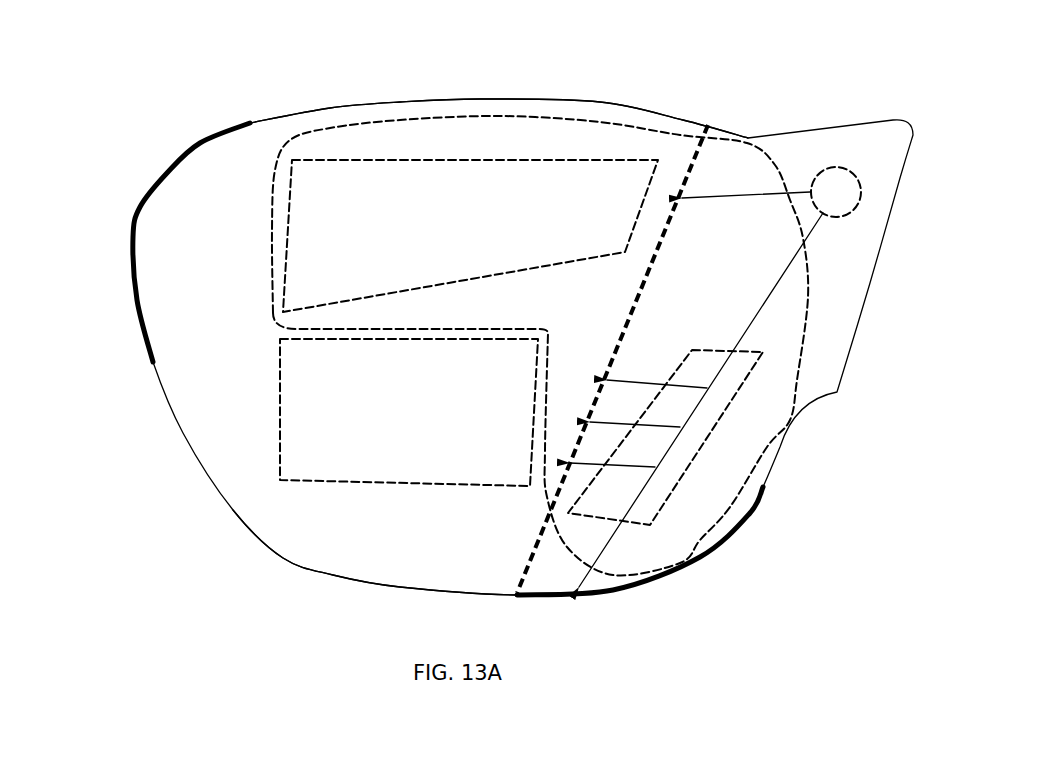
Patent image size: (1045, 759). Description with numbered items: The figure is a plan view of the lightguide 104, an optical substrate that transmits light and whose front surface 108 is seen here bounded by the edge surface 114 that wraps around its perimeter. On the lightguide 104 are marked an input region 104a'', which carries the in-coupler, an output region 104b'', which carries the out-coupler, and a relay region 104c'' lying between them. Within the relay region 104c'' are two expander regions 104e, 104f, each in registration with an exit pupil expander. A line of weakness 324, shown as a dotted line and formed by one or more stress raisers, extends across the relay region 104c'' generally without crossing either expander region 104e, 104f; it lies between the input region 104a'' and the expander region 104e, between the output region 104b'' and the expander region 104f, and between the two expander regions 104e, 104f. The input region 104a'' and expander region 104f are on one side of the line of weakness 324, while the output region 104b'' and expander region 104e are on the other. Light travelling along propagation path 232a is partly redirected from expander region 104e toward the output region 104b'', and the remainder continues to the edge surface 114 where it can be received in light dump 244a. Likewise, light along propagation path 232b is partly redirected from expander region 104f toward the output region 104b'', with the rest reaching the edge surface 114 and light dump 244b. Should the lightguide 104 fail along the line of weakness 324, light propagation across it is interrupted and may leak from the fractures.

The lightguide 104 is at (183, 437).
The front surface 108 is at (210, 178).
The edge surface 114 is at (335, 577).
The light dump 244a is at (133, 240).
The light dump 244b is at (617, 593).
The line of weakness 324 is at (705, 138).
The input region 104a'' is at (864, 153).
The propagation path 232a is at (719, 195).
The propagation path 232b is at (765, 298).
The expander region 104e is at (500, 231).
The output region 104b'' is at (409, 412).
The relay region 104c'' is at (653, 368).
The expander region 104f is at (698, 435).